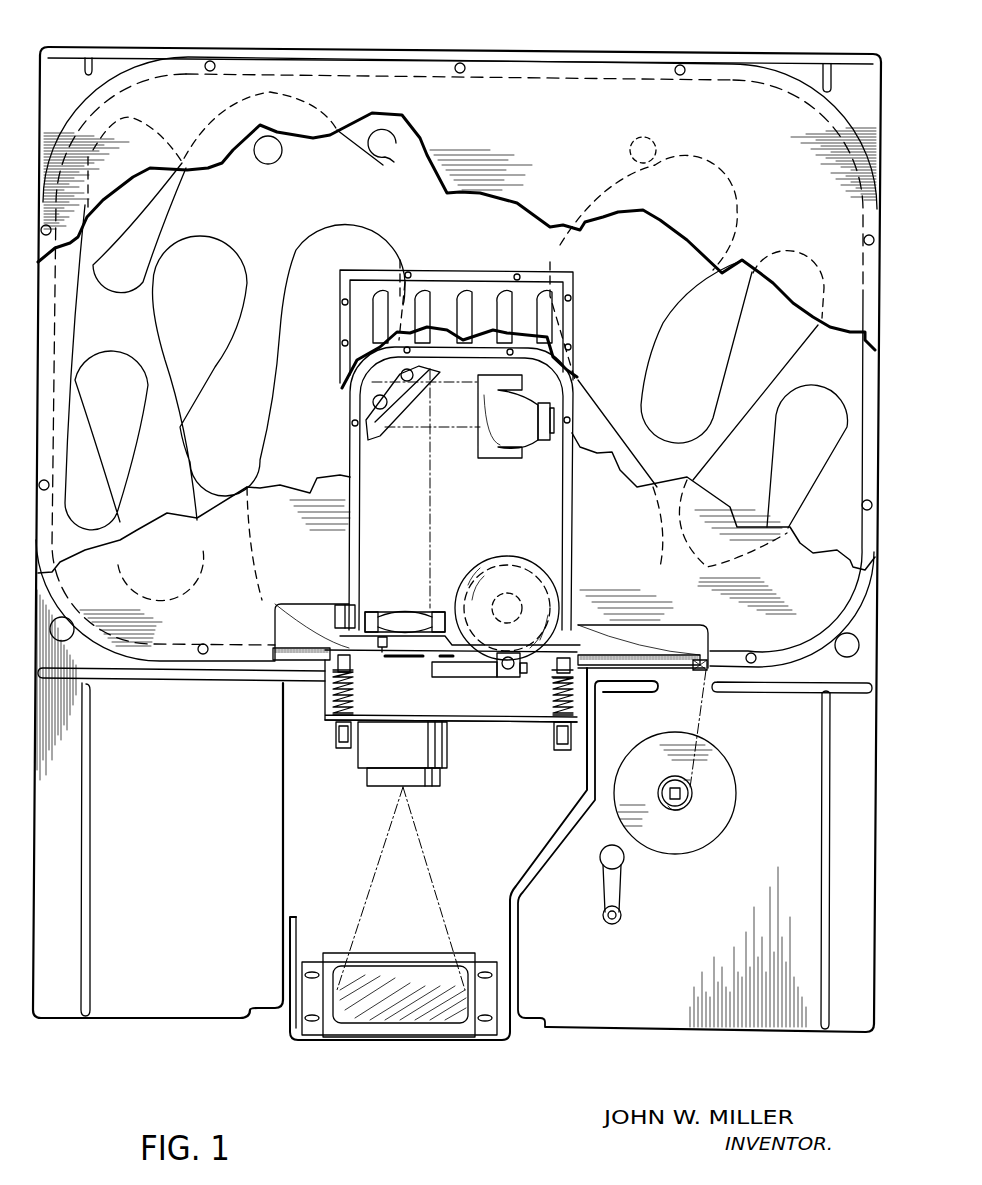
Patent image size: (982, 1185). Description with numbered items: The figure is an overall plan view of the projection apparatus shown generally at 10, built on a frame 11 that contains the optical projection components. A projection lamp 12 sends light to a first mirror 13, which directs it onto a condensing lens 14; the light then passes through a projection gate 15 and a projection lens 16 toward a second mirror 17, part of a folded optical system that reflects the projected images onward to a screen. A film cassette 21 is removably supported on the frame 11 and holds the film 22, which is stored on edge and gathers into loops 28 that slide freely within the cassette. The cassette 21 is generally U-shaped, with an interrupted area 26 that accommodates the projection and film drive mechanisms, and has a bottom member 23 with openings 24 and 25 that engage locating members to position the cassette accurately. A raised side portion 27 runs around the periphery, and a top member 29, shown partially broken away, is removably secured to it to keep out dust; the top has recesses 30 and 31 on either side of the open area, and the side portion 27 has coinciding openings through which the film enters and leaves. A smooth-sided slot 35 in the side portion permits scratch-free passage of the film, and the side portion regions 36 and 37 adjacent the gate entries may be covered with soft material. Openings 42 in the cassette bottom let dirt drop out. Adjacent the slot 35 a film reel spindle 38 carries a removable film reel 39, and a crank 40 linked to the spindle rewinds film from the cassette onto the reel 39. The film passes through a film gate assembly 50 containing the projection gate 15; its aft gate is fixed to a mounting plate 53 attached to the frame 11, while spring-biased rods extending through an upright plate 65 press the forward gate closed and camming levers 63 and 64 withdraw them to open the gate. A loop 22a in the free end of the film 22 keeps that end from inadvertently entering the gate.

The projection apparatus embodiment 10 is at (281, 1042).
The frame 11 is at (174, 913).
The projection lamp 12 is at (478, 440).
The first mirror 13 is at (362, 444).
The condensing lens 14 is at (398, 612).
The projection gate 15 is at (382, 652).
The projection lens 16 is at (370, 788).
The second mirror 17 is at (338, 966).
The film cassette 21 is at (118, 47).
The film 22 is at (284, 618).
The loop 22a is at (392, 160).
The bottom member 23 is at (120, 660).
The opening 24 is at (58, 618).
The opening 25 is at (840, 636).
The interrupted area 26 is at (506, 512).
The raised side portion 27 is at (812, 82).
The loops 28 is at (296, 240).
The top member 29 is at (527, 138).
The recess 30 is at (290, 603).
The recess 31 is at (670, 627).
The slot 35 is at (698, 672).
The side portion region 36 is at (603, 656).
The side portion region 37 is at (292, 648).
The film reel spindle 38 is at (673, 797).
The film reel 39 is at (705, 854).
The crank 40 is at (620, 925).
The openings 42 is at (280, 158).
The film gate assembly 50 is at (463, 730).
The mounting plate 53 is at (458, 708).
The camming lever 63 is at (343, 749).
The camming lever 64 is at (564, 751).
The upright plate 65 is at (518, 723).